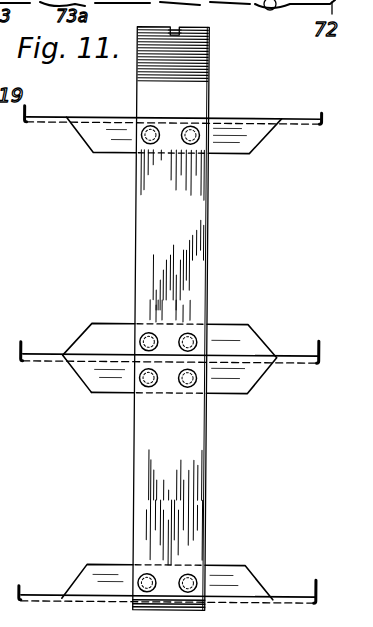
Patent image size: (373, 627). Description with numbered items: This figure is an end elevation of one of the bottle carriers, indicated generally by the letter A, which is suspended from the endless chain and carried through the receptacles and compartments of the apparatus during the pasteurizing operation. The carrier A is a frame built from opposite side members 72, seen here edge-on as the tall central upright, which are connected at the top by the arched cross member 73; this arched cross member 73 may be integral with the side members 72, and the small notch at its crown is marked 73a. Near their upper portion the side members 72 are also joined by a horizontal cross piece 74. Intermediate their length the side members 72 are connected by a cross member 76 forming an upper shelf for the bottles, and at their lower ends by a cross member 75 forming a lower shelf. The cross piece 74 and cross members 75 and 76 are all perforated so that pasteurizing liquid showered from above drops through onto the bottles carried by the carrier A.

The side member 72 is at (171, 319).
The arched cross member 73 is at (196, 80).
The notch in end of bar 73a is at (172, 33).
The horizontal cross piece 74 is at (278, 120).
The cross member 76 is at (281, 358).
The cross member 75 is at (274, 598).
The carrier A is at (281, 241).